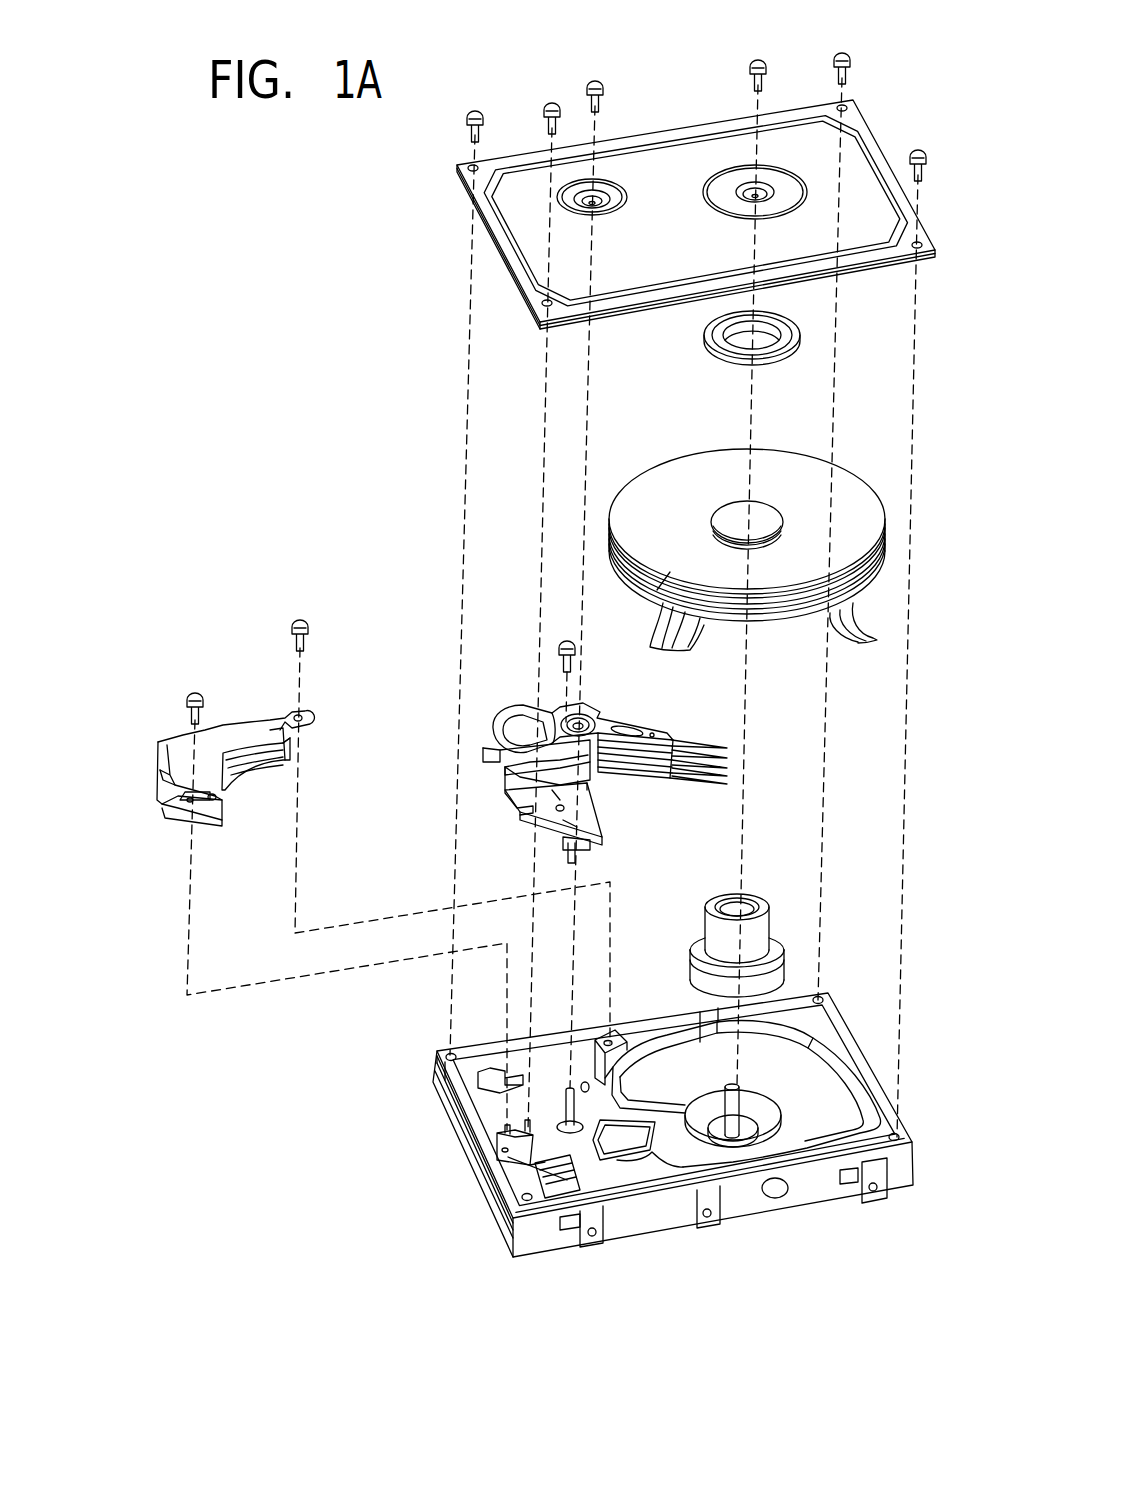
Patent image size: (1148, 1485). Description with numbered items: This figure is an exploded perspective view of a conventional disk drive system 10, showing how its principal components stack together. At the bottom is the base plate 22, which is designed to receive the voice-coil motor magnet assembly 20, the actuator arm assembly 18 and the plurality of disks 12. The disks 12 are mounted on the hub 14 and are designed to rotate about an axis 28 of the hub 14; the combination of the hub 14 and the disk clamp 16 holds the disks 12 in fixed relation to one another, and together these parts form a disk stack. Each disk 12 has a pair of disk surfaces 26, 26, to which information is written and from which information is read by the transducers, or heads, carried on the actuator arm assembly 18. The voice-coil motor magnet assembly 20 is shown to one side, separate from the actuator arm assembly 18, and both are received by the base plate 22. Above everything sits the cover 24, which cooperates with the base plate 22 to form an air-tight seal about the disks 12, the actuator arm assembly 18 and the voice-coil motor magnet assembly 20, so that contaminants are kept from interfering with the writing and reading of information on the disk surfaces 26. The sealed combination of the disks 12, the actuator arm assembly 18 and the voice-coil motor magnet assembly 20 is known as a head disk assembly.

The disk drive system 10 is at (326, 249).
The disks 12 is at (872, 638).
The hub 14 is at (705, 932).
The disk clamp 16 is at (703, 340).
The actuator arm assembly 18 is at (635, 722).
The voice-coil motor magnet assembly 20 is at (163, 729).
The base plate 22 is at (790, 1210).
The cover 24 is at (652, 159).
The disk surfaces 26 is at (651, 645).
The axis 28 is at (720, 893).